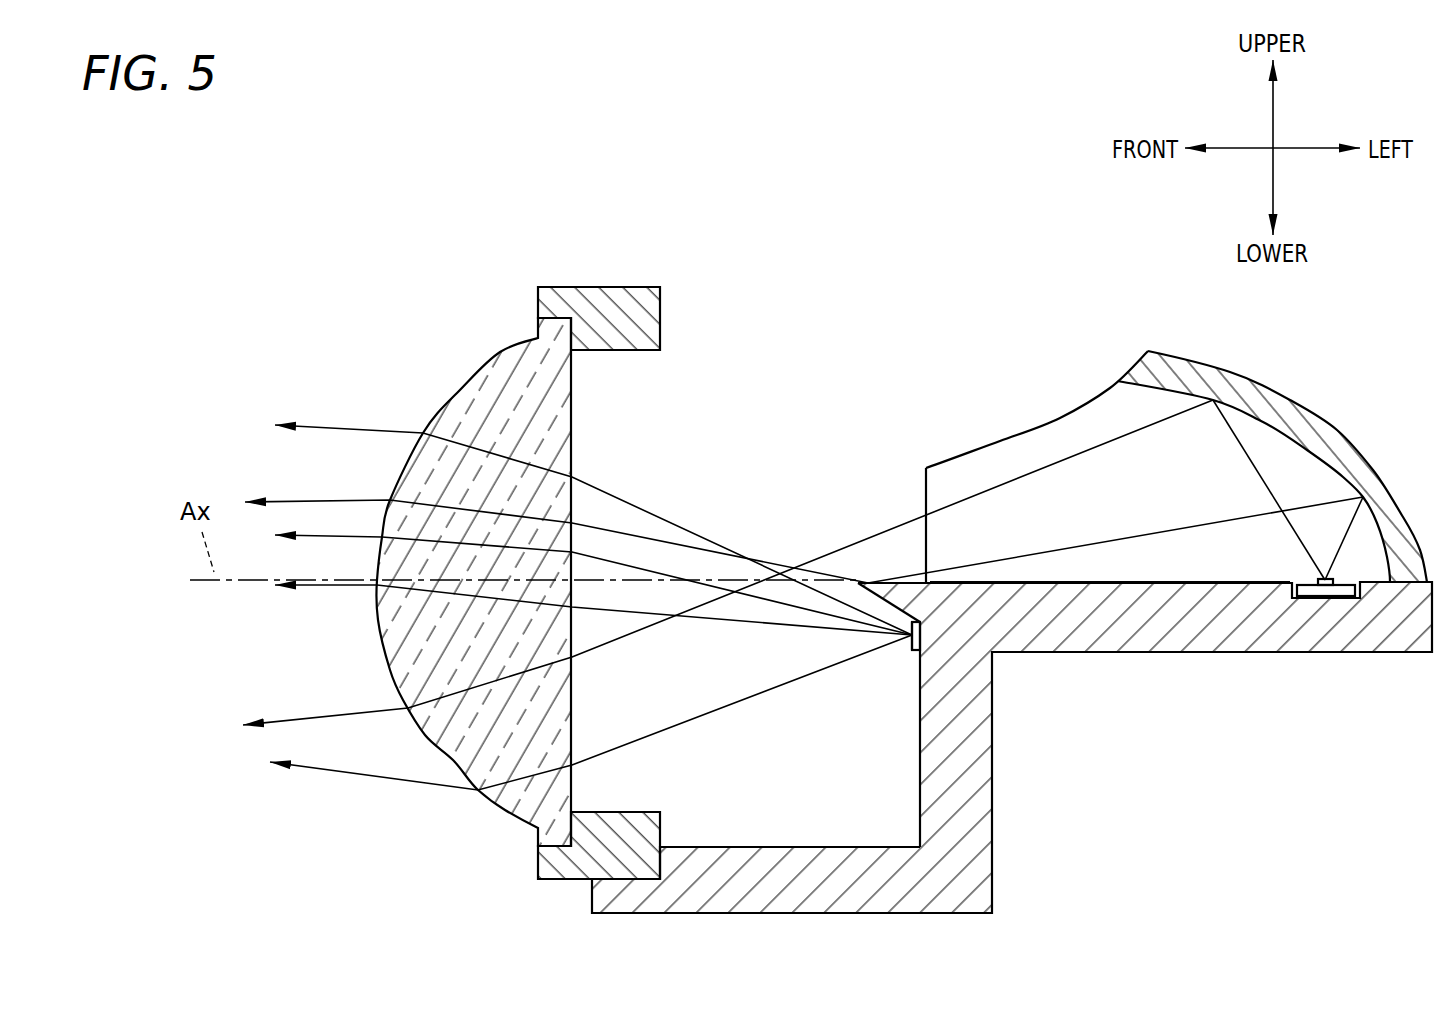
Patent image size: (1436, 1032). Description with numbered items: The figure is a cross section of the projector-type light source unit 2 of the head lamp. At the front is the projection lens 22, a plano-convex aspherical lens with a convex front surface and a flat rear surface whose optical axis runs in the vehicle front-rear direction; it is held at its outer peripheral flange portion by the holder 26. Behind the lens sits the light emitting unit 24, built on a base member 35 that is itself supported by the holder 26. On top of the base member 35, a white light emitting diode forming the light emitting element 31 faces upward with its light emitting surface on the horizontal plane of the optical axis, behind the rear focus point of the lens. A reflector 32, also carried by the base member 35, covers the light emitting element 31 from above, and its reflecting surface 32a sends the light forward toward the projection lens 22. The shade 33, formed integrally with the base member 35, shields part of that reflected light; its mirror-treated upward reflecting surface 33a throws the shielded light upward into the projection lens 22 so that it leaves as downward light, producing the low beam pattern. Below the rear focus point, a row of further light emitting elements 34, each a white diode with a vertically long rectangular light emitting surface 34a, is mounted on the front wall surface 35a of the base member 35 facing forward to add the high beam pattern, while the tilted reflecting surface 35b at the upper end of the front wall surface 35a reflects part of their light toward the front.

The light source unit 2 is at (387, 215).
The projection lens 22 is at (455, 391).
The light emitting unit 24 is at (998, 345).
The holder 26 is at (640, 283).
The light emitting element 31 is at (1301, 578).
The reflector 32 is at (1272, 454).
The reflecting surface 32a is at (1257, 420).
The shade 33 is at (1080, 466).
The upward reflecting surface 33a is at (955, 581).
The light emitting elements 34 is at (844, 671).
The light emitting surface 34a is at (911, 648).
The base member 35 is at (1012, 747).
The front wall surface 35a is at (918, 742).
The reflecting surface 35b is at (876, 620).